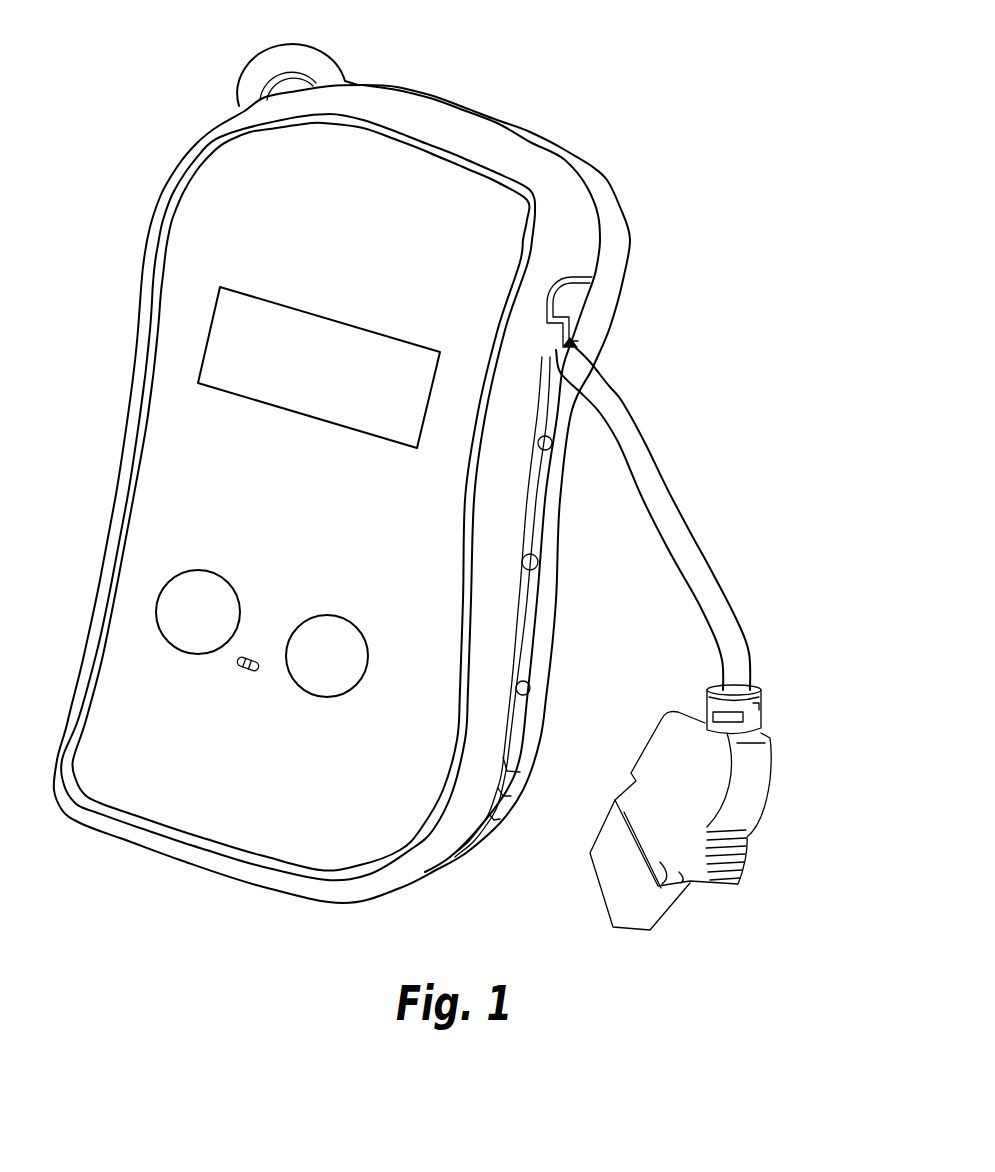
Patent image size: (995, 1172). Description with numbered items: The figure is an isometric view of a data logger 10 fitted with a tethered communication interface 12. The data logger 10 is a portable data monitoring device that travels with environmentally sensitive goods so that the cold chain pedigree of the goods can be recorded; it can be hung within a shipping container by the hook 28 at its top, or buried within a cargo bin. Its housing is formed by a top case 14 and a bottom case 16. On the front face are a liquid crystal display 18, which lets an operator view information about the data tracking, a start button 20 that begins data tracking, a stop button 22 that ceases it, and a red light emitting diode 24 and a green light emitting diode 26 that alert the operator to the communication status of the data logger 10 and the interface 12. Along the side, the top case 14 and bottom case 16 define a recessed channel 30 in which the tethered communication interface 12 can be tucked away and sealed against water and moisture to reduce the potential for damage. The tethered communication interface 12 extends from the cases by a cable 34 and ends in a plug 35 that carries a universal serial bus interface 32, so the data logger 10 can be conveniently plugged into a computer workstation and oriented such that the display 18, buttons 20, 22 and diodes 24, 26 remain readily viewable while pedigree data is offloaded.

The data logger 10 is at (600, 118).
The tethered communication interface 12 is at (710, 822).
The top case 14 is at (199, 143).
The bottom case 16 is at (615, 238).
The liquid crystal display 18 is at (319, 367).
The start button 20 is at (198, 612).
The stop button 22 is at (327, 656).
The red light emitting diode 24 is at (241, 670).
The green light emitting diode 26 is at (255, 673).
The hook 28 is at (322, 67).
The channel 30 is at (537, 628).
The universal serial bus interface 32 is at (637, 912).
The cable 34 is at (633, 458).
The plug 35 is at (773, 780).